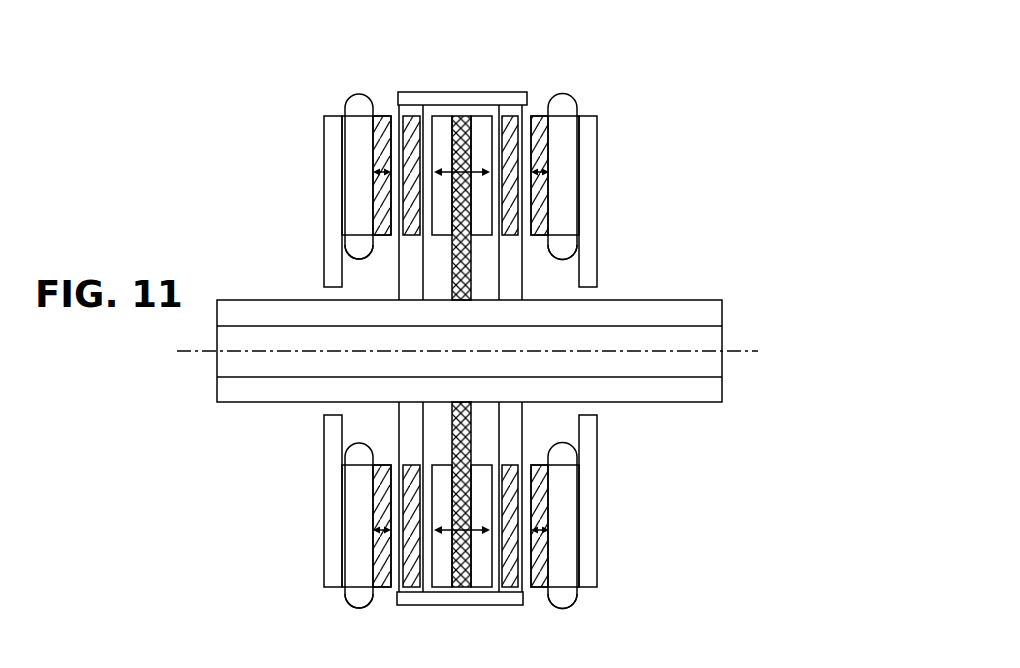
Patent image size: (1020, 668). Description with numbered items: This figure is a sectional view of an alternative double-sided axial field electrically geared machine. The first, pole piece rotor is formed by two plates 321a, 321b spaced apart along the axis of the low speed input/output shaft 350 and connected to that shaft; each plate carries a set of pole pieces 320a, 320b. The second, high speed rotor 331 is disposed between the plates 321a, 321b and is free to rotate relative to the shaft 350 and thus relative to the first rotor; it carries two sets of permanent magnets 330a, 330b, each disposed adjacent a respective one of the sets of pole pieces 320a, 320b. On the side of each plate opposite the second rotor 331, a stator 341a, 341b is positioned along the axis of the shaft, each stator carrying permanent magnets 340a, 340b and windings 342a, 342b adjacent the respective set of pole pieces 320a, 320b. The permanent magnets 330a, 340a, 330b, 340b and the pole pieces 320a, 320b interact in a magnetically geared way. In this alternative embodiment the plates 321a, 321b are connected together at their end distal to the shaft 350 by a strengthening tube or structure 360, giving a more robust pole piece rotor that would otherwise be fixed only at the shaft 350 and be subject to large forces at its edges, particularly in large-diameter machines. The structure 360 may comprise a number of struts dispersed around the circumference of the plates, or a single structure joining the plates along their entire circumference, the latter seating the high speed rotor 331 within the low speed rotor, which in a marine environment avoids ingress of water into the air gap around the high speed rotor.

The pole pieces 320a is at (402, 223).
The pole pieces 320b is at (513, 207).
The plate of the first rotor 321a is at (407, 425).
The plate of the first rotor 321b is at (512, 427).
The permanent magnets 330a is at (447, 135).
The permanent magnets 330b is at (477, 148).
The second rotor 331 is at (470, 450).
The permanent magnets 340a is at (373, 145).
The permanent magnets 340b is at (540, 140).
The stator 341a is at (355, 172).
The stator 341b is at (573, 163).
The windings 342a is at (350, 240).
The windings 342b is at (567, 250).
The input/output shaft 350 is at (706, 317).
The strengthening tube or structure 360 is at (410, 97).